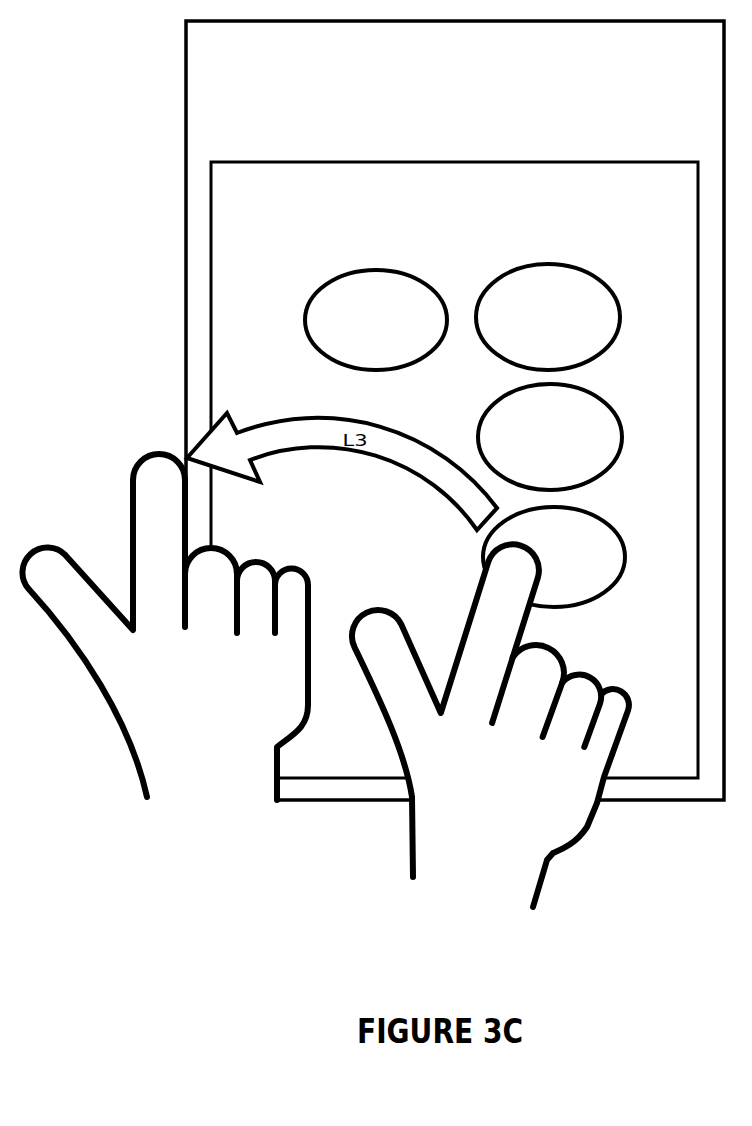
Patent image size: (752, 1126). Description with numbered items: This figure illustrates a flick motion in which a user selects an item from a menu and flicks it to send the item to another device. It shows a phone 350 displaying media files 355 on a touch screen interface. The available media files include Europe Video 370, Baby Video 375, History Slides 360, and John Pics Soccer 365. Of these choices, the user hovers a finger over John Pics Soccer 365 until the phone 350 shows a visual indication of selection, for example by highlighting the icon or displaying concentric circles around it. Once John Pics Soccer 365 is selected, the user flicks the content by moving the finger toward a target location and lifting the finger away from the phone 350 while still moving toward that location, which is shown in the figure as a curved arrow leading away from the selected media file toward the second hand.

The phone 350 is at (433, 120).
The media files 355 is at (433, 226).
The History Slides 360 is at (550, 437).
The John Pics Soccer 365 is at (554, 557).
The Europe Video 370 is at (376, 320).
The Baby Video 375 is at (548, 317).